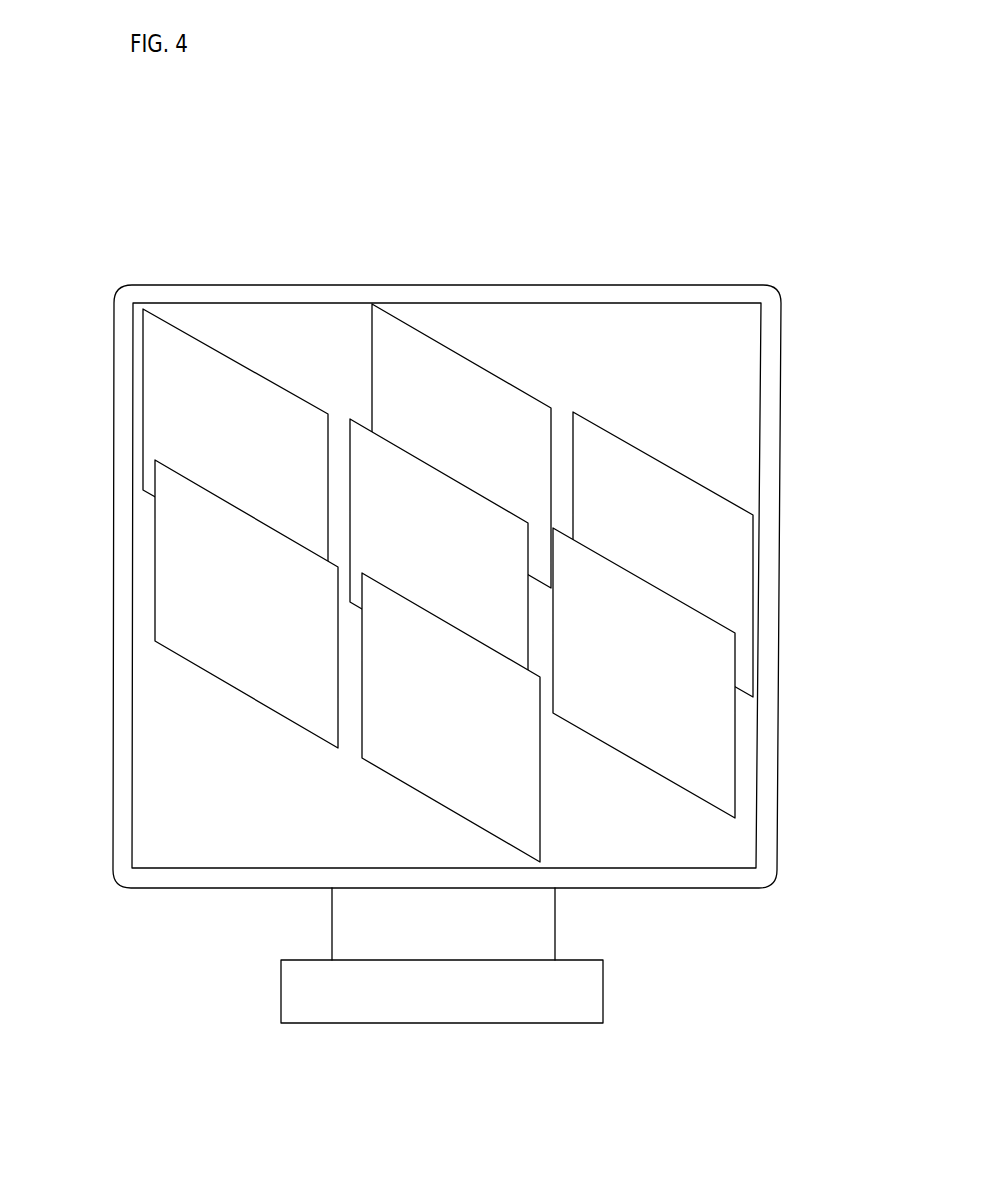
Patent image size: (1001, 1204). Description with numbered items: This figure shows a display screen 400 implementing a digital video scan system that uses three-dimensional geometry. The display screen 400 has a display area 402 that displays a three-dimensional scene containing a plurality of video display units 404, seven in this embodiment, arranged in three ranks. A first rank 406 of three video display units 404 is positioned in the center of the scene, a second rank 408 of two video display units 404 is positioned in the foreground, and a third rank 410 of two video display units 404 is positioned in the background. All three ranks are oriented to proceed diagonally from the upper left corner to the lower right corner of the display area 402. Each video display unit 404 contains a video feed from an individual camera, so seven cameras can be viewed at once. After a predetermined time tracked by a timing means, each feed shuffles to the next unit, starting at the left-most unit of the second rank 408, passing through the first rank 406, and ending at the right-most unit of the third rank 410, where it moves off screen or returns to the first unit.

The display screen 400 is at (432, 144).
The display area 402 is at (623, 345).
The video display units 404 is at (518, 778).
The first rank 406 is at (180, 408).
The second rank 408 is at (197, 525).
The third rank 410 is at (412, 372).